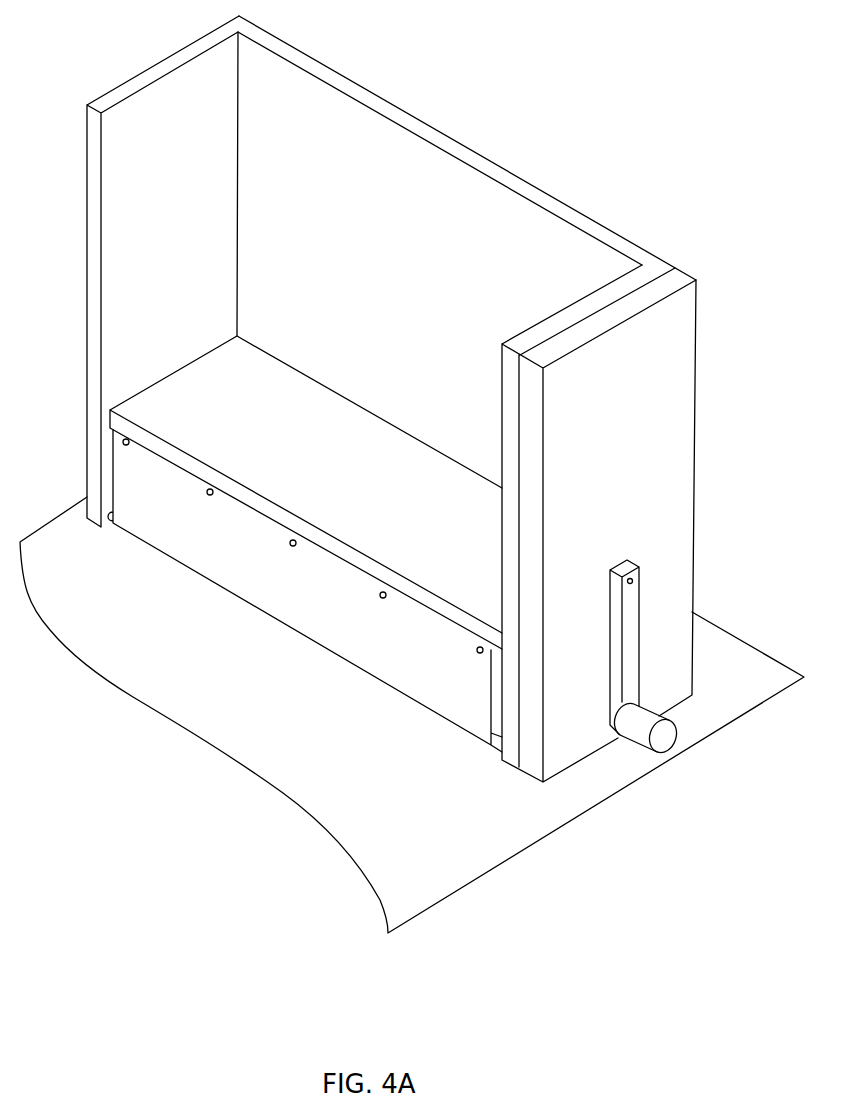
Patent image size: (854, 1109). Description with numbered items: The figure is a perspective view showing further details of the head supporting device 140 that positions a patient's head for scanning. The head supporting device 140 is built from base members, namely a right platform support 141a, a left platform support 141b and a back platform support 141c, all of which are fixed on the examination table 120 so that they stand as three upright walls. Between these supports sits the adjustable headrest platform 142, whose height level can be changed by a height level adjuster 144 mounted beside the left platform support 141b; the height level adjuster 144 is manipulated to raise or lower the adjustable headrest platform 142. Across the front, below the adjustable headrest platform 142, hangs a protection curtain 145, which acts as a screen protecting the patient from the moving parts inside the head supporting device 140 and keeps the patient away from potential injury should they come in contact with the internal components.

The examination table 120 is at (396, 801).
The head supporting device 140 is at (653, 110).
The right platform support 141a is at (90, 494).
The left platform support 141b is at (512, 747).
The back platform support 141c is at (428, 172).
The adjustable headrest platform 142 is at (334, 471).
The height level adjuster 144 is at (640, 627).
The protection curtain 145 is at (345, 637).